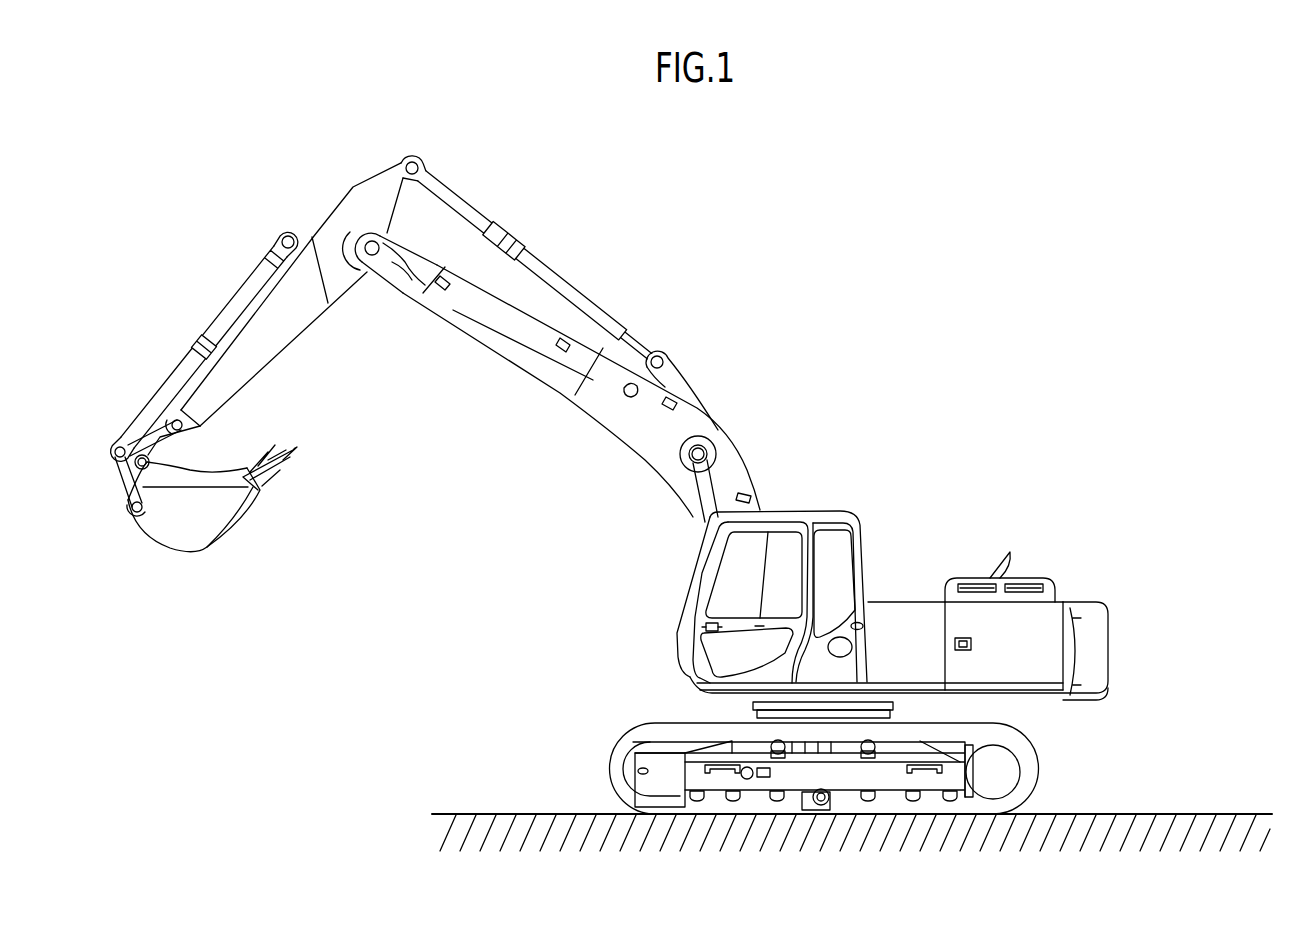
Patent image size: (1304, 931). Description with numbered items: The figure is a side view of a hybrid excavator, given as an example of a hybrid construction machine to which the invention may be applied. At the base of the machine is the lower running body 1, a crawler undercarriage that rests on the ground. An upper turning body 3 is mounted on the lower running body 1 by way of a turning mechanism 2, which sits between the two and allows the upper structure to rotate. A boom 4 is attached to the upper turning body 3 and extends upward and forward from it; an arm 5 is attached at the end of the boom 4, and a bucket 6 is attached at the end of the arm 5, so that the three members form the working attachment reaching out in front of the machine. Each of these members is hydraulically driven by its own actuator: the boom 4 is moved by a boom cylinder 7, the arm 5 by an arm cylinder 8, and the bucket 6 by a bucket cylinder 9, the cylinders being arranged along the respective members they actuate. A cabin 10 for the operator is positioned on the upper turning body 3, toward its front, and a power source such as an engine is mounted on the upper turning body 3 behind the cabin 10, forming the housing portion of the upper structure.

The lower running body 1 is at (612, 750).
The turning mechanism 2 is at (870, 706).
The upper turning body 3 is at (906, 602).
The boom 4 is at (605, 410).
The arm 5 is at (295, 323).
The bucket 6 is at (200, 543).
The boom cylinder 7 is at (707, 490).
The arm cylinder 8 is at (593, 307).
The bucket cylinder 9 is at (236, 307).
The cabin 10 is at (845, 508).